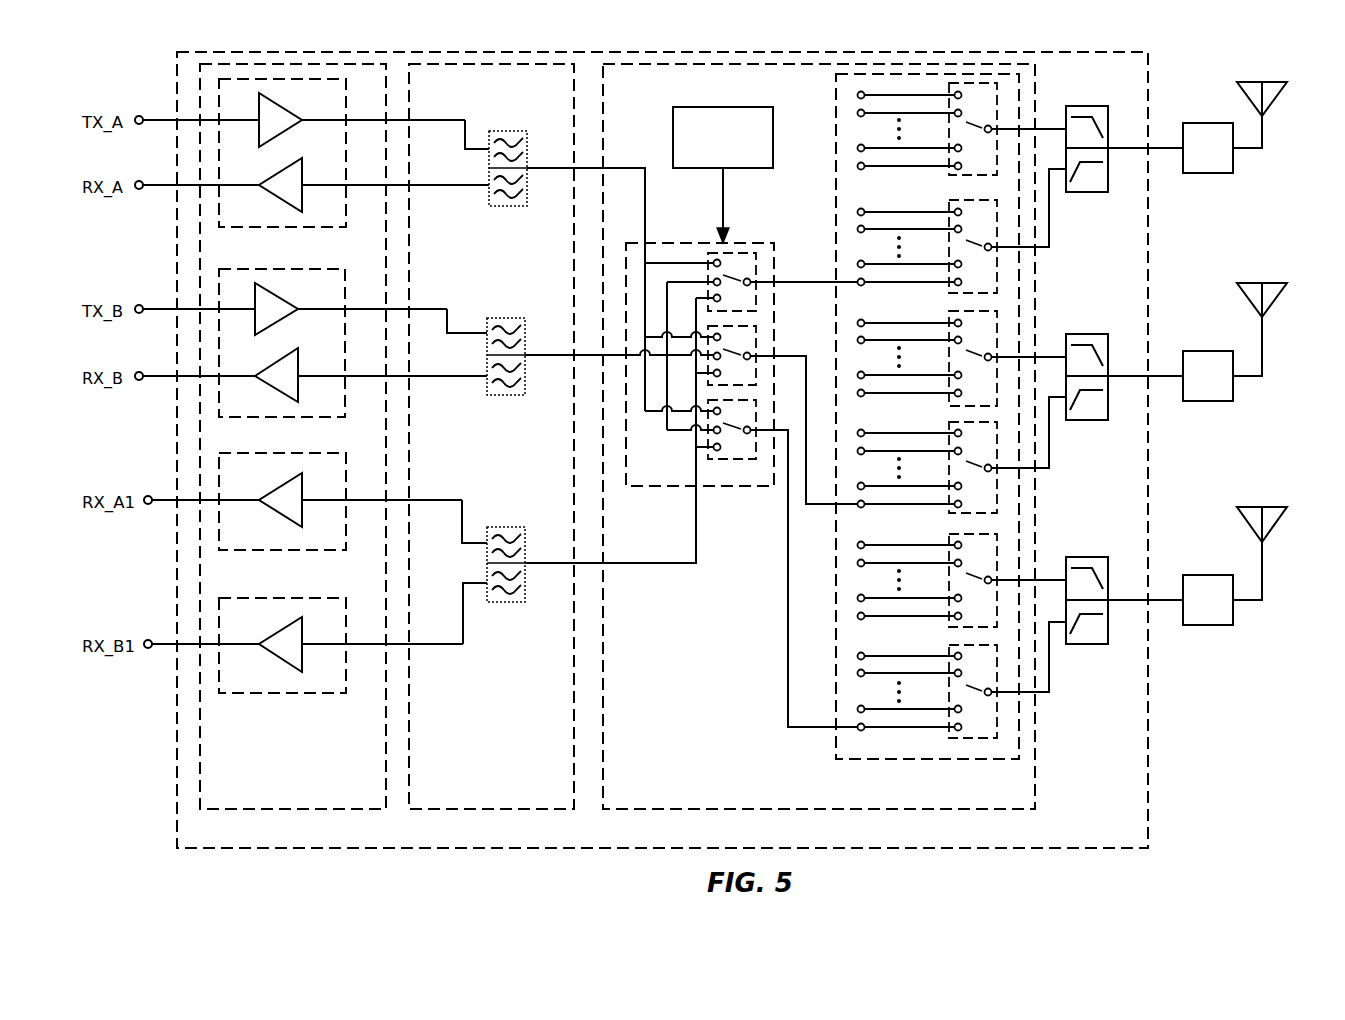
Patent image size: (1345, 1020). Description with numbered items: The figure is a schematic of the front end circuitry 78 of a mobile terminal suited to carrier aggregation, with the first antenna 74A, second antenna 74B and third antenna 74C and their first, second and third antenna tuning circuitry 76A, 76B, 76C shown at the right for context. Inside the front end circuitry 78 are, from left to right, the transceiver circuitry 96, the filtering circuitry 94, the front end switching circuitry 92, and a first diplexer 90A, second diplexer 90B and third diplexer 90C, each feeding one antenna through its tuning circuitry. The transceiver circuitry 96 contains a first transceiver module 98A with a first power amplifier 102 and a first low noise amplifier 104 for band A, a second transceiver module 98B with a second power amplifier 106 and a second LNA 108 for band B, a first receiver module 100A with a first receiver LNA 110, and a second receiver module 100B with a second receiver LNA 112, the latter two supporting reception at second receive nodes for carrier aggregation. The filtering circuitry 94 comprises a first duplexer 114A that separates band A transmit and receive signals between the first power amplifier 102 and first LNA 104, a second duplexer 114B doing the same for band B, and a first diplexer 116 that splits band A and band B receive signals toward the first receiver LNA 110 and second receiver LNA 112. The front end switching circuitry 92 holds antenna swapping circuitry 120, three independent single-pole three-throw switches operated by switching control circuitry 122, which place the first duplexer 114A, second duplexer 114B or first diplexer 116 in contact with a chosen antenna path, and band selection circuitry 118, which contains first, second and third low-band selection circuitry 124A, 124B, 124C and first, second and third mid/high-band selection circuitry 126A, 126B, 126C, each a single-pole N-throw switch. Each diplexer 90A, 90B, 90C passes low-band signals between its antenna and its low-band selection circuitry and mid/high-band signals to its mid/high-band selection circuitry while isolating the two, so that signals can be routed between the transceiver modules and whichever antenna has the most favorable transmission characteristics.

The first antenna 74A is at (1279, 83).
The second antenna 74B is at (1279, 284).
The third antenna 74C is at (1279, 508).
The first antenna tuning circuitry 76A is at (1193, 165).
The second antenna tuning circuitry 76B is at (1193, 393).
The third antenna tuning circuitry 76C is at (1193, 617).
The front end circuitry 78 is at (437, 838).
The first diplexer 90A is at (1088, 193).
The second diplexer 90B is at (1088, 421).
The third diplexer 90C is at (1088, 645).
The front end switching circuitry 92 is at (955, 803).
The filtering circuitry 94 is at (540, 802).
The transceiver circuitry 96 is at (333, 802).
The first transceiver module 98A is at (308, 228).
The second transceiver module 98B is at (308, 418).
The first receiver module 100A is at (303, 551).
The second receiver module 100B is at (300, 694).
The first power amplifier 102 is at (287, 104).
The first low noise amplifier 104 is at (275, 176).
The second power amplifier 106 is at (283, 292).
The second low noise amplifier 108 is at (270, 366).
The first receiver low noise amplifier 110 is at (275, 488).
The second receiver low noise amplifier 112 is at (278, 632).
The first duplexer 114A is at (498, 207).
The second duplexer 114B is at (500, 396).
The first diplexer 116 is at (503, 603).
The band selection circuitry 118 is at (837, 750).
The antenna swapping circuitry 120 is at (665, 477).
The switching control circuitry 122 is at (709, 157).
The first low-band selection circuitry 124A is at (968, 174).
The second low-band selection circuitry 124B is at (968, 404).
The third low-band selection circuitry 124C is at (968, 626).
The first mid/high-band selection circuitry 126A is at (968, 291).
The second mid/high-band selection circuitry 126B is at (968, 513).
The third mid/high-band selection circuitry 126C is at (968, 737).